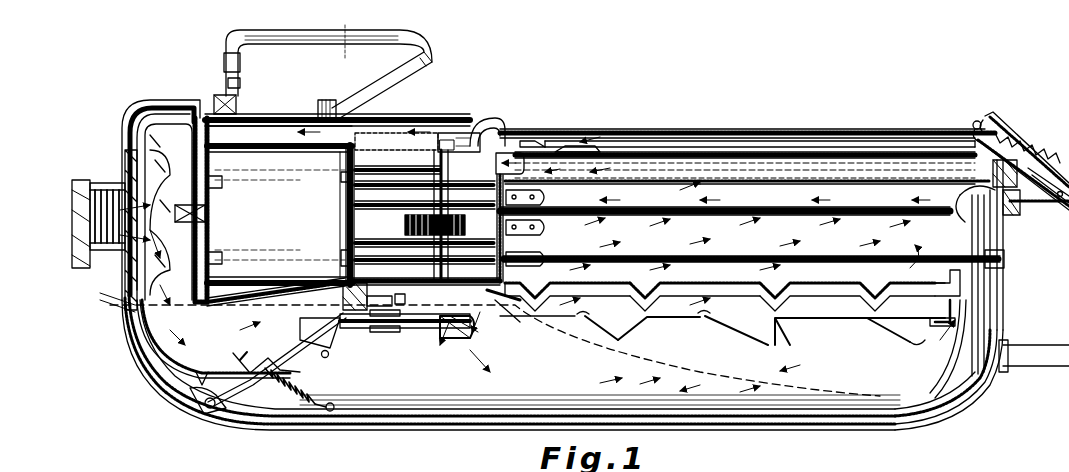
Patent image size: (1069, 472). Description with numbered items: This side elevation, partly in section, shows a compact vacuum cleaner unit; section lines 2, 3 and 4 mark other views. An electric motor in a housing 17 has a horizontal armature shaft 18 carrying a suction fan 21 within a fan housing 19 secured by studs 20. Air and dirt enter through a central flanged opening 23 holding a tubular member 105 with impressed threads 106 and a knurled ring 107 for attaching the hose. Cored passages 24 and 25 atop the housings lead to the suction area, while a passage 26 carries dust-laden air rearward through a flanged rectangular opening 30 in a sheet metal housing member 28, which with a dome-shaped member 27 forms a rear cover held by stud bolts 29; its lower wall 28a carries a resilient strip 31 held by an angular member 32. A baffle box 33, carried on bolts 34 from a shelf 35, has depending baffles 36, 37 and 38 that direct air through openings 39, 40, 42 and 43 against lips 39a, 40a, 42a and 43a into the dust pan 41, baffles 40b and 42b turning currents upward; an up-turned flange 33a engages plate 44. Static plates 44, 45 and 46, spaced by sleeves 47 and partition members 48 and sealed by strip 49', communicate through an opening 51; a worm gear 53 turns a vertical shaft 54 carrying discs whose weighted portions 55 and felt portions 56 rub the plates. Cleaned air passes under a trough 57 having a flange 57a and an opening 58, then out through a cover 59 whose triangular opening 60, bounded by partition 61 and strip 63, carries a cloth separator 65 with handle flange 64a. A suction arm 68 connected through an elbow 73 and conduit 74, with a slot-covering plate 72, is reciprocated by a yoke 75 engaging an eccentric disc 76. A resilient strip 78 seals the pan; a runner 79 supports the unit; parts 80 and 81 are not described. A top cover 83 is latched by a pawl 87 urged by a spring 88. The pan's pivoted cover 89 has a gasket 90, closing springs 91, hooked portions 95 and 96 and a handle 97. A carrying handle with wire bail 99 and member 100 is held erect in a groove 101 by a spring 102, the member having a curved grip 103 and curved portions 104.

The section line 2- 2 is at (80, 25).
The section line 3- 3 is at (468, 90).
The section line 4- 4 is at (815, 93).
The motor housing 17 is at (279, 204).
The armature shaft 18 is at (200, 213).
The fan housing 19 is at (195, 303).
The studs 20 is at (228, 180).
The suction fan 21 is at (221, 251).
The central flanged opening 23 is at (160, 200).
The cored passage 24 is at (258, 118).
The cored passage 25 is at (170, 106).
The passage 26 is at (258, 314).
The dome-shaped member 27 is at (345, 196).
The sheet metal housing member 28 is at (346, 216).
The lower wall 28a is at (331, 354).
The stud bolts 29 is at (341, 259).
The flanged rectangular opening 30 is at (345, 300).
The strip of resilient material 31 is at (448, 338).
The angular metallic member 32 is at (425, 330).
The baffle box 33 is at (948, 327).
The up-turned flange 33a is at (975, 318).
The bolts 34 is at (379, 301).
The shelf 35 is at (403, 294).
The baffle 36 is at (540, 290).
The baffle 37 is at (650, 296).
The baffle 38 is at (847, 297).
The opening 39 is at (478, 320).
The lip 39a is at (515, 322).
The opening 40 is at (608, 334).
The lip 40a is at (632, 332).
The baffle 40b is at (582, 316).
The dust pan 41 is at (925, 420).
The opening 42 is at (748, 338).
The arcuate lip 42a is at (776, 335).
The baffle 42b is at (700, 312).
The opening 43 is at (878, 327).
The lip 43a is at (915, 345).
The plate 44 is at (940, 278).
The plate 45 is at (925, 256).
The plate 46 is at (850, 212).
The spacing sleeves 47 is at (329, 181).
The channel shaped partition members 48 is at (445, 215).
The sealing strip 49' is at (1014, 256).
The opening 51 is at (548, 247).
The worm gear 53 is at (395, 226).
The vertical shaft 54 is at (440, 284).
The weighted portion 55 is at (425, 190).
The felt portion 56 is at (422, 209).
The trough 57 is at (750, 185).
The flange 57a is at (972, 196).
The opening 58 is at (555, 192).
The cover 59 is at (548, 145).
The triangularly shaped opening 60 is at (645, 122).
The transverse partition member 61 is at (496, 112).
The transverse angle strip 63 is at (575, 150).
The upturned flange 64a is at (1020, 142).
The cloth member 65 is at (710, 153).
The arm 68 is at (700, 170).
The plate member 72 is at (512, 152).
The elbow 73 is at (458, 132).
The removable connecting conduit 74 is at (408, 130).
The fork or yoke 75 is at (397, 165).
The disc 76 is at (445, 140).
The resilient strip 78 is at (1020, 205).
The runner 79 is at (170, 393).
The hinge plate 80 is at (530, 235).
The hinge plate 81 is at (531, 197).
The top cover 83 is at (858, 124).
The locking pawl 87 is at (1005, 128).
The spring 88 is at (1030, 150).
The pivoted cover 89 is at (242, 395).
The resilient gasket member 90 is at (193, 408).
The springs 91 is at (322, 386).
The hooked portion 95 is at (260, 356).
The hooked portion 96 is at (276, 294).
The handle 97 is at (178, 406).
The wire bail 99 is at (405, 70).
The sheet metal member 100 is at (358, 47).
The groove 101 is at (228, 42).
The spring 102 is at (328, 100).
The wide curved part 103 is at (305, 40).
The curved portions 104 is at (224, 60).
The tubular member 105 is at (100, 226).
The threads 106 is at (108, 210).
The knurled ring 107 is at (72, 186).